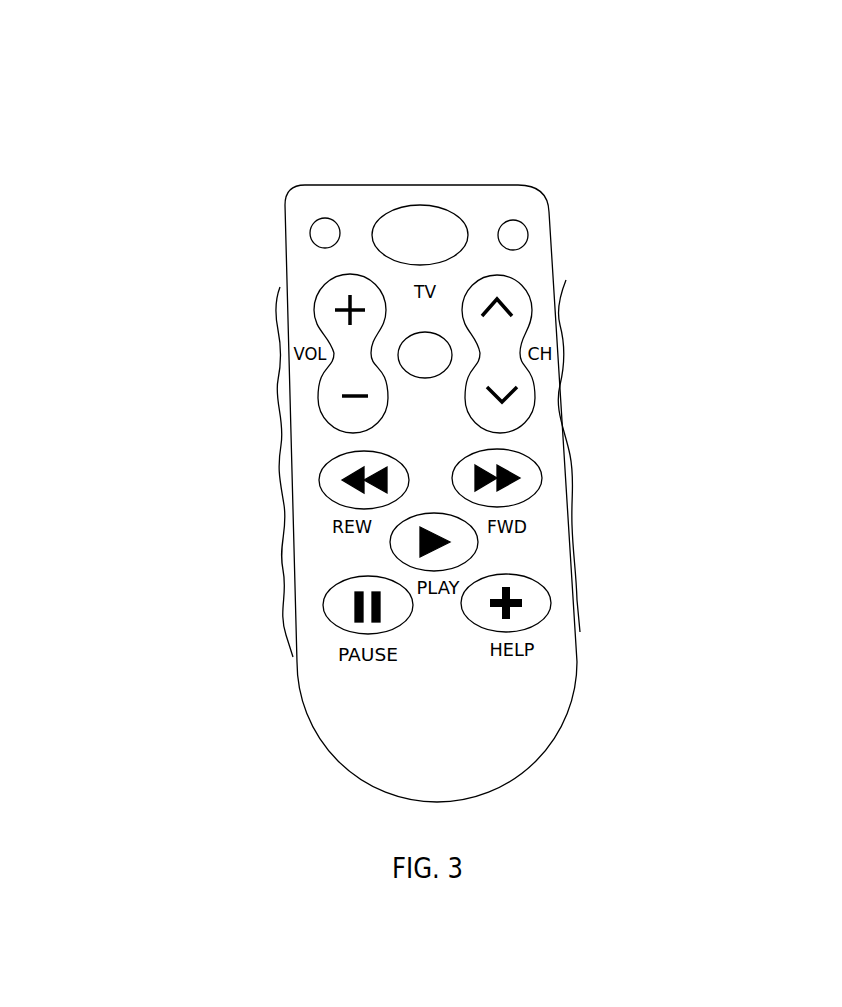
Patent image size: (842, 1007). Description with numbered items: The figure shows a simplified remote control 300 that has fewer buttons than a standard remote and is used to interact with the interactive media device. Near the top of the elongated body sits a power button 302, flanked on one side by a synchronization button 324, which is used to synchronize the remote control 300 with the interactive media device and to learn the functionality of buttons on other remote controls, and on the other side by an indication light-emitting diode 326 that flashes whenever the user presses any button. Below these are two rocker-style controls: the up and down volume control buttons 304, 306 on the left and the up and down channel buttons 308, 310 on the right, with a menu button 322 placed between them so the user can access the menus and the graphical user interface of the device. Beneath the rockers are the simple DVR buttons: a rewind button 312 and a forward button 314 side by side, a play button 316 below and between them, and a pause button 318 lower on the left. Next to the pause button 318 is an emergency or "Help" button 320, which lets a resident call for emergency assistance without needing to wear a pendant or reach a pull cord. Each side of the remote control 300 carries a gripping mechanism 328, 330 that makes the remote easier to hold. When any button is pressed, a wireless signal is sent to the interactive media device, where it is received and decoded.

The remote control 300 is at (580, 89).
The power button 302 is at (413, 212).
The up volume control button 304 is at (318, 310).
The down volume control button 306 is at (327, 405).
The up channel button 308 is at (523, 308).
The down channel button 310 is at (527, 403).
The rewind button 312 is at (320, 474).
The forward button 314 is at (523, 463).
The play button 316 is at (476, 552).
The pause button 318 is at (325, 625).
The emergency button 320 is at (548, 604).
The menu button 322 is at (435, 367).
The synchronization button 324 is at (319, 221).
The indication light-emitting diode 326 is at (520, 232).
The gripping mechanism 328 is at (283, 538).
The gripping mechanism 330 is at (572, 527).